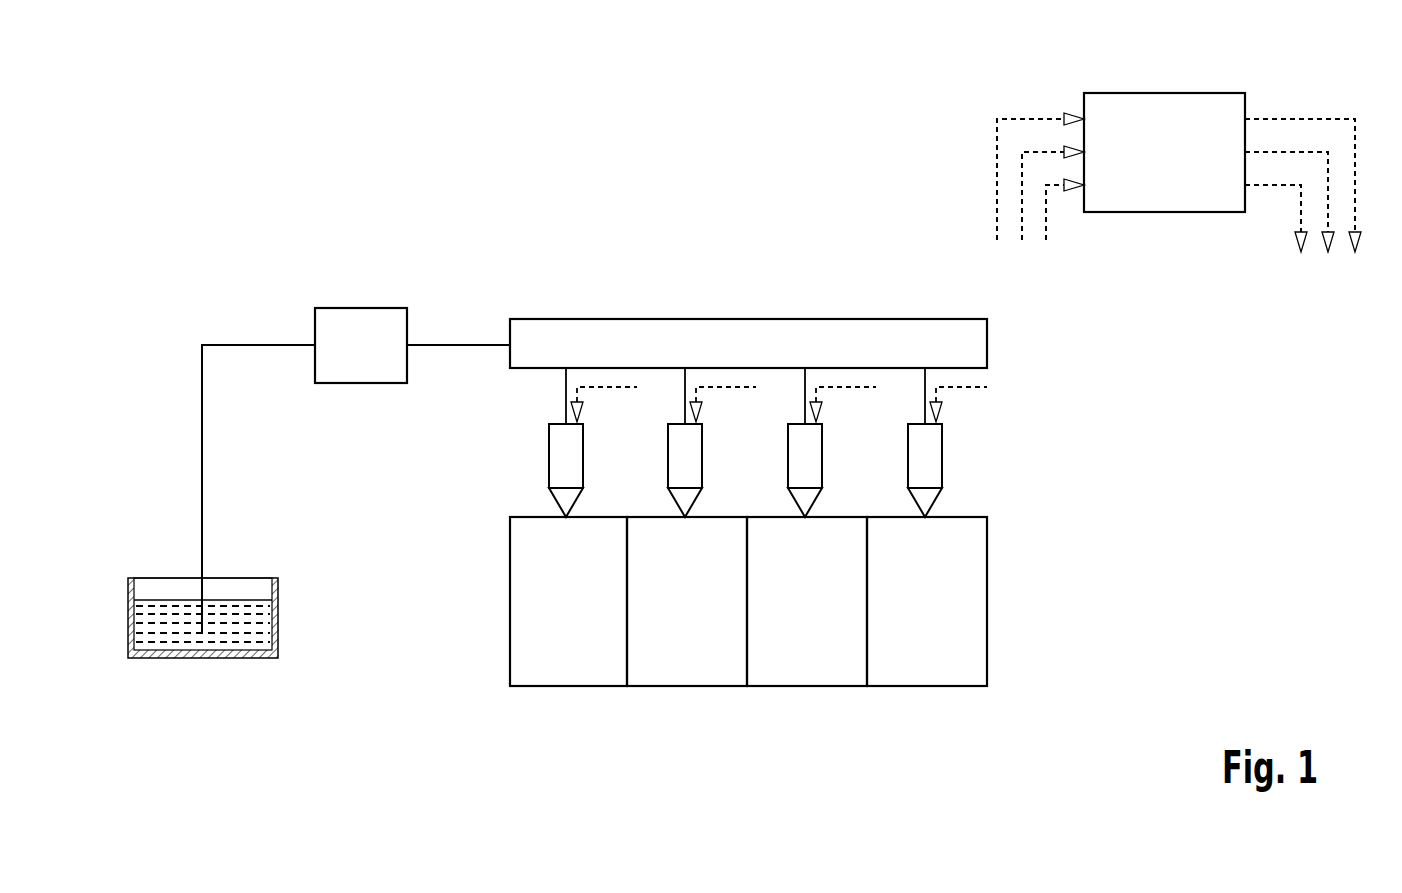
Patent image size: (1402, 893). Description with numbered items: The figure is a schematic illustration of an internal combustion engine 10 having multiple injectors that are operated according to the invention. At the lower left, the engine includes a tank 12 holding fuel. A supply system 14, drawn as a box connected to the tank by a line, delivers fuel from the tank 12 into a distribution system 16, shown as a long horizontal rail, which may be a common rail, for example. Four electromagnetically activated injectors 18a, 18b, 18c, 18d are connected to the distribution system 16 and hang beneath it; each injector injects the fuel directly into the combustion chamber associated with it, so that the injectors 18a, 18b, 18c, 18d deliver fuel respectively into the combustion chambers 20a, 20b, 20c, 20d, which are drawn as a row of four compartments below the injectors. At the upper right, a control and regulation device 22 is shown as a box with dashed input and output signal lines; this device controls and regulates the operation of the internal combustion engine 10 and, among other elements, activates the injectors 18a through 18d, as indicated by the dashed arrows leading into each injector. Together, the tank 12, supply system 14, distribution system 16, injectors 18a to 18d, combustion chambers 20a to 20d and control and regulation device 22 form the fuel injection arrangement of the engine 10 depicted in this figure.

The internal combustion engine 10 is at (218, 214).
The tank 12 is at (247, 637).
The supply system 14 is at (360, 384).
The distribution system 16 is at (747, 318).
The injector 18a is at (584, 470).
The injector 18b is at (703, 470).
The injector 18c is at (823, 470).
The injector 18d is at (943, 470).
The combustion chamber 20a is at (563, 680).
The combustion chamber 20b is at (690, 680).
The combustion chamber 20c is at (808, 680).
The combustion chamber 20d is at (920, 680).
The control and regulation device 22 is at (1168, 212).